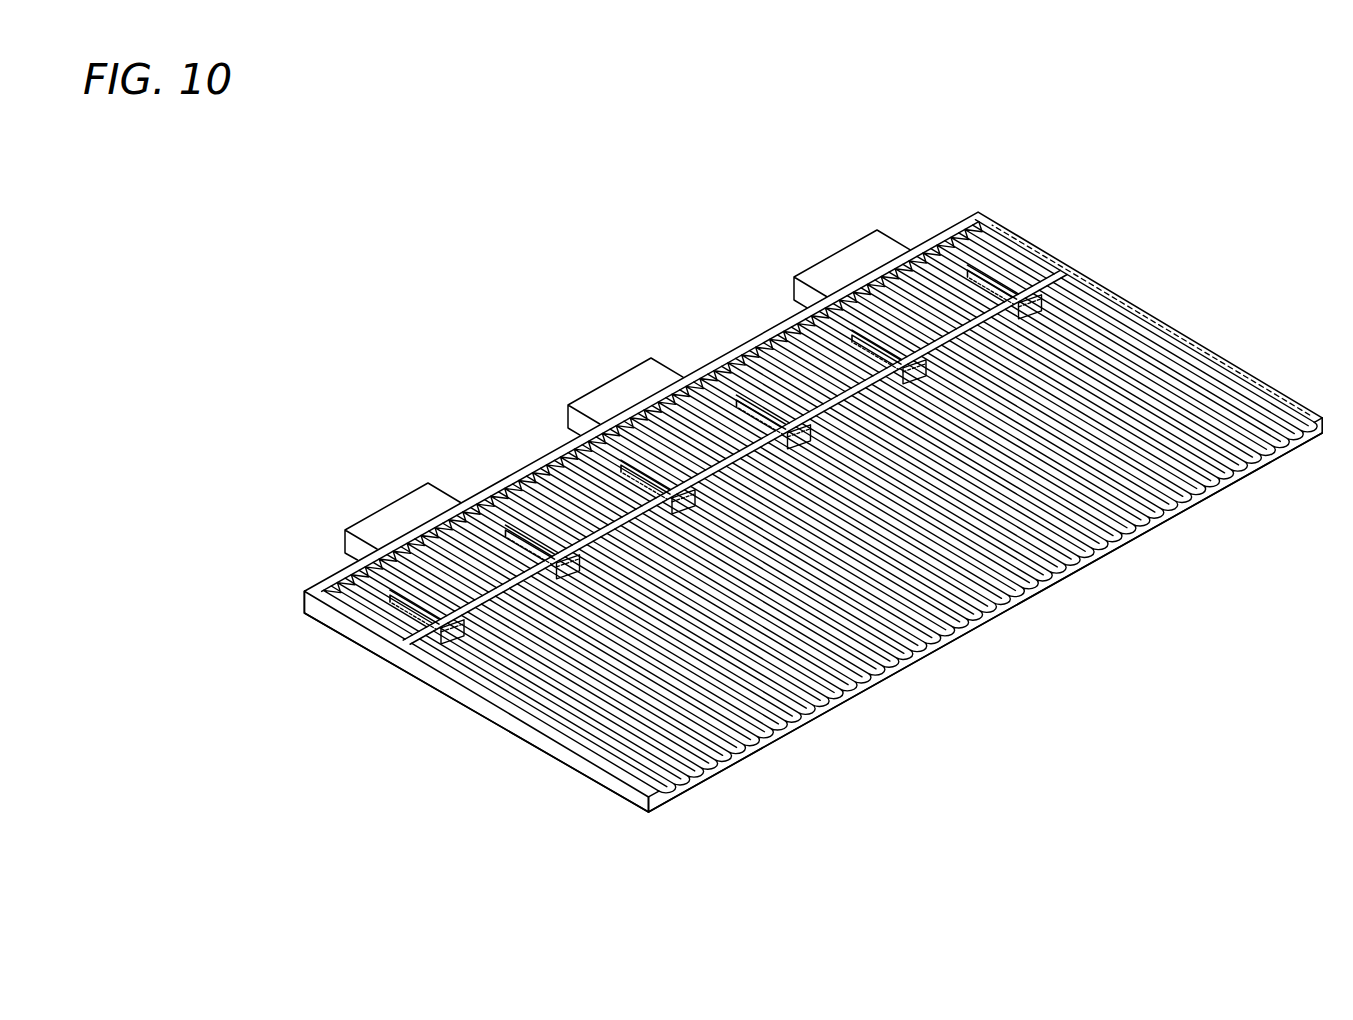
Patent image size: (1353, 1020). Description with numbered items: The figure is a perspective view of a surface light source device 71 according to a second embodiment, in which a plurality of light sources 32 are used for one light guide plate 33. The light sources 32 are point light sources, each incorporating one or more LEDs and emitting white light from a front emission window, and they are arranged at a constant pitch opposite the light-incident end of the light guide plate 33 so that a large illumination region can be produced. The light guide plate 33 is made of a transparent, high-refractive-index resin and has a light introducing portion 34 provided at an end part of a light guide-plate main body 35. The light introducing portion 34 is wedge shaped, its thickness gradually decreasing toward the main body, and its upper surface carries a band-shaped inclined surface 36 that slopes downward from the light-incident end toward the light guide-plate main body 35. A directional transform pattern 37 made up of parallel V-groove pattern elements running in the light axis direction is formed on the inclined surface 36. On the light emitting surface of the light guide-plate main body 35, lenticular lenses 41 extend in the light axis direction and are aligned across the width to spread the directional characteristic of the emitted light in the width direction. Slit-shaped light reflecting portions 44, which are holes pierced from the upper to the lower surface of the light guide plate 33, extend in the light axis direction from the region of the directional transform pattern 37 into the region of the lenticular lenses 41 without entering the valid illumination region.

The surface light source device 71 is at (430, 279).
The light source 32 is at (840, 258).
The light guide plate 33 is at (1188, 338).
The light introducing portion 34 is at (352, 632).
The light guide-plate main body 35 is at (502, 722).
The inclined surface 36 is at (757, 402).
The directional transform pattern 37 is at (993, 267).
The lenticular lenses 41 is at (1010, 567).
The light reflecting portion 44 is at (1033, 286).